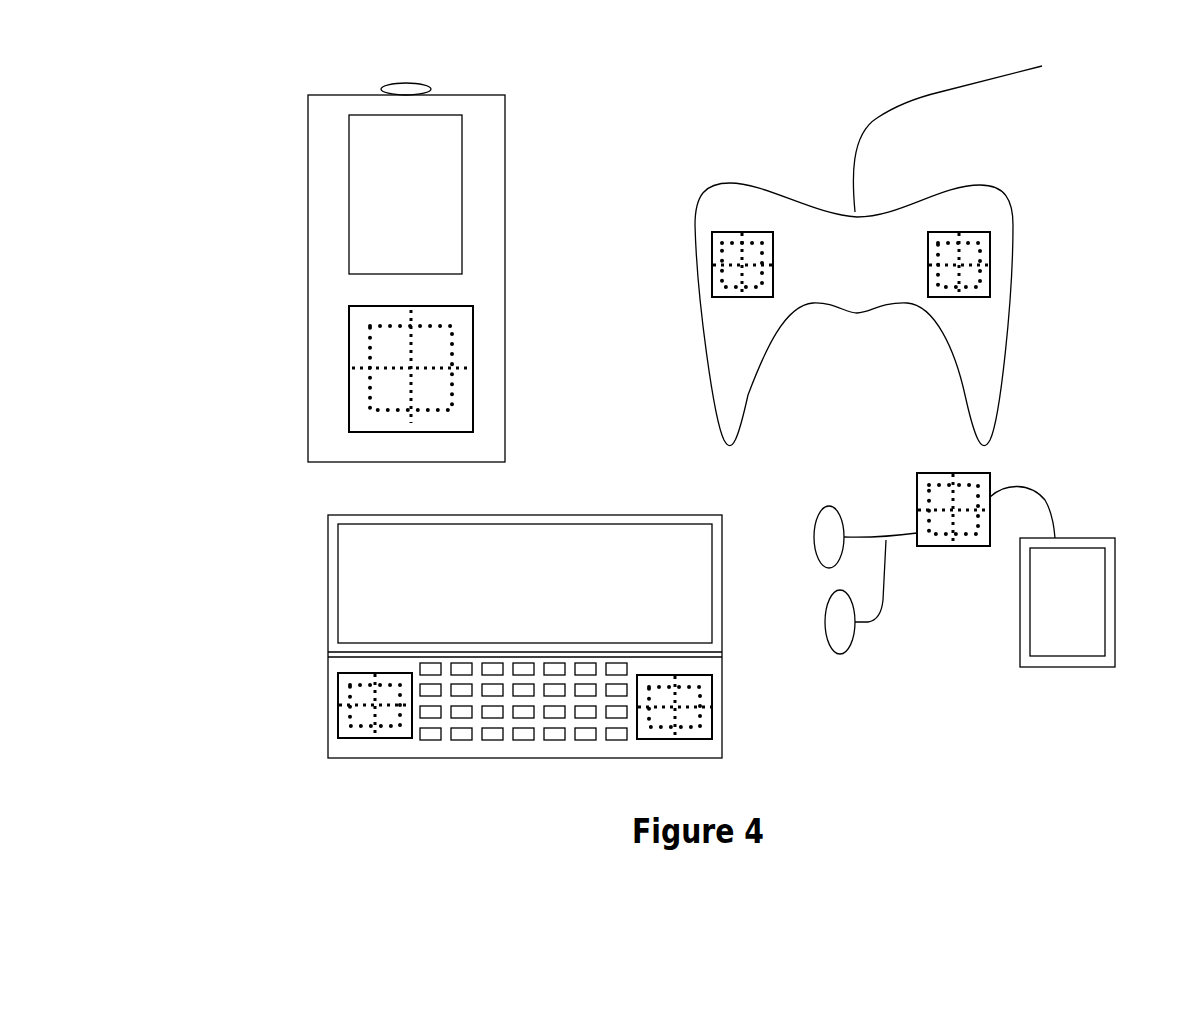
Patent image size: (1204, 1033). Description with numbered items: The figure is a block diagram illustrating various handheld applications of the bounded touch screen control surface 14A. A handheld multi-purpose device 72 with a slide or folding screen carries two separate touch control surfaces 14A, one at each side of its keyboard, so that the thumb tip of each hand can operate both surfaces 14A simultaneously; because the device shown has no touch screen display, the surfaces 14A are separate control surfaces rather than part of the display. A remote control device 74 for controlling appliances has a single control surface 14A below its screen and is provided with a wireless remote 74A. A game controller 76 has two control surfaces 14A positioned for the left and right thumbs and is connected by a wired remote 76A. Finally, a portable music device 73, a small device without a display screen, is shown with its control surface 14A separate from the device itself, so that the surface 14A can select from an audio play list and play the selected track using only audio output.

The control surface 14A is at (349, 358).
The handheld multi-purpose device 72 is at (327, 557).
The portable music device 73 is at (1083, 537).
The remote control device 74 is at (308, 188).
The wireless remote 74A is at (381, 76).
The game controller 76 is at (700, 190).
The wired remote 76A is at (857, 141).